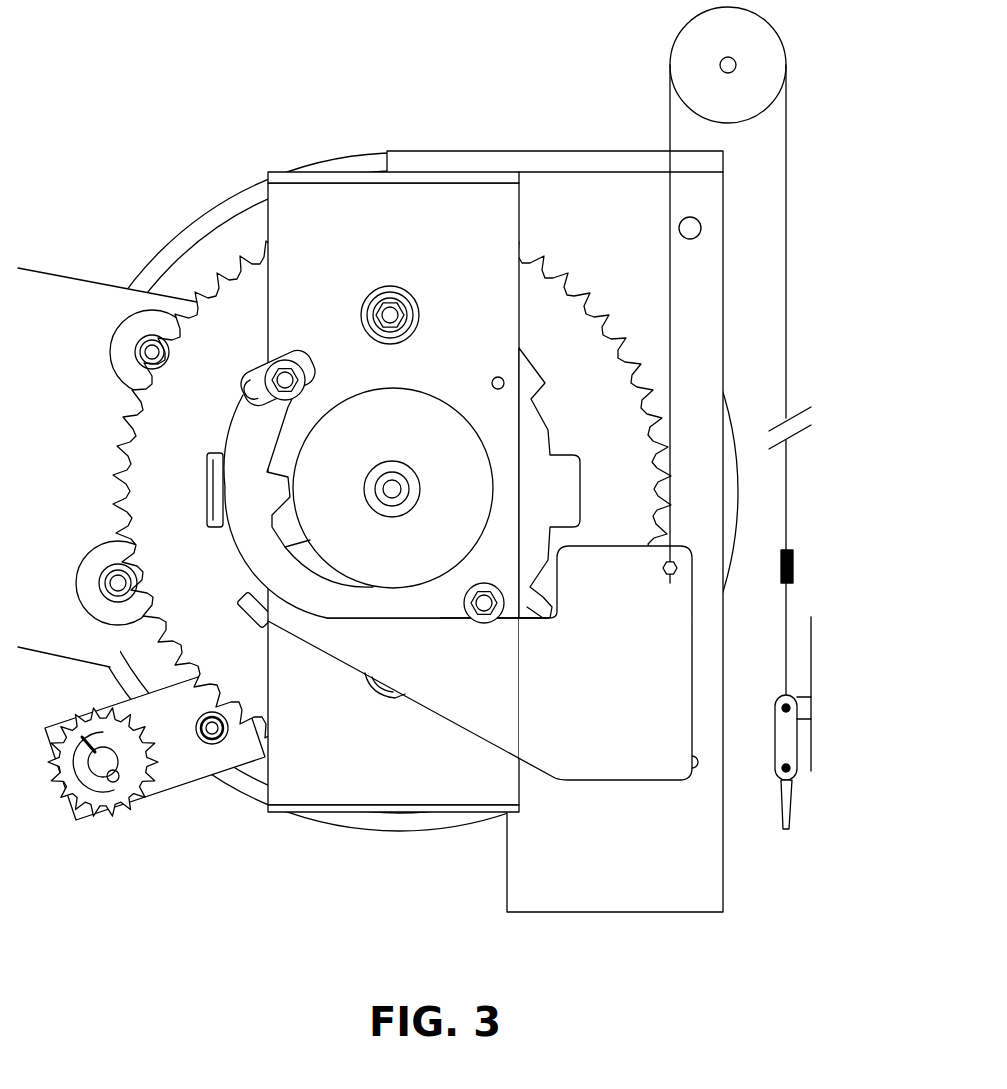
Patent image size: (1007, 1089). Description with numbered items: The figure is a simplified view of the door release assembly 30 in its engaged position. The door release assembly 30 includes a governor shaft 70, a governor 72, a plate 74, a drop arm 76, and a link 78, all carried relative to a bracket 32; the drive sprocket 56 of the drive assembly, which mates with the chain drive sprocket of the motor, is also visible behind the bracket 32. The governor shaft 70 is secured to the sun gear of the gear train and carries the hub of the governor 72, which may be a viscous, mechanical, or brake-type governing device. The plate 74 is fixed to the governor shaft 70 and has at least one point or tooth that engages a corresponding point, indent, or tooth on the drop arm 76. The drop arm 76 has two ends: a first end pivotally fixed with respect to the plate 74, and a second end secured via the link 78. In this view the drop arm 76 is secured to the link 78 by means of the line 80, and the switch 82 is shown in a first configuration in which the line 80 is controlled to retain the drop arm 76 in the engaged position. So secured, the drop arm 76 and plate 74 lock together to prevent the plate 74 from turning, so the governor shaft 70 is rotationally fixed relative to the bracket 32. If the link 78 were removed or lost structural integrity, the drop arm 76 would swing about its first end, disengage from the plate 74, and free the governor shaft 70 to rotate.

The door release assembly 30 is at (354, 128).
The bracket 32 is at (268, 172).
The drive sprocket 56 is at (529, 324).
The governor shaft 70 is at (402, 472).
The governor 72 is at (534, 509).
The plate 74 is at (382, 444).
The drop arm 76 is at (566, 712).
The link 78 is at (794, 566).
The line 80 is at (790, 280).
The switch 82 is at (835, 731).